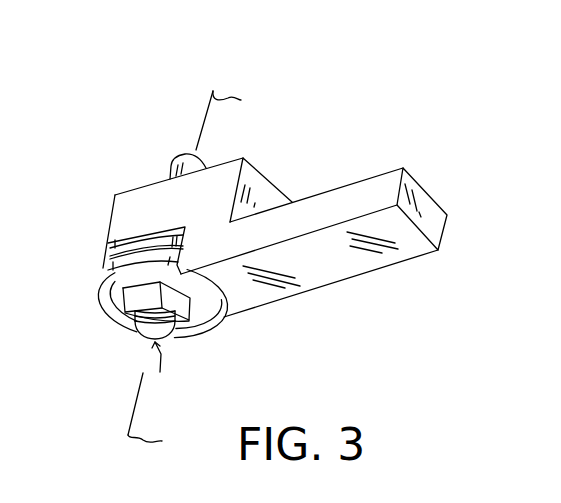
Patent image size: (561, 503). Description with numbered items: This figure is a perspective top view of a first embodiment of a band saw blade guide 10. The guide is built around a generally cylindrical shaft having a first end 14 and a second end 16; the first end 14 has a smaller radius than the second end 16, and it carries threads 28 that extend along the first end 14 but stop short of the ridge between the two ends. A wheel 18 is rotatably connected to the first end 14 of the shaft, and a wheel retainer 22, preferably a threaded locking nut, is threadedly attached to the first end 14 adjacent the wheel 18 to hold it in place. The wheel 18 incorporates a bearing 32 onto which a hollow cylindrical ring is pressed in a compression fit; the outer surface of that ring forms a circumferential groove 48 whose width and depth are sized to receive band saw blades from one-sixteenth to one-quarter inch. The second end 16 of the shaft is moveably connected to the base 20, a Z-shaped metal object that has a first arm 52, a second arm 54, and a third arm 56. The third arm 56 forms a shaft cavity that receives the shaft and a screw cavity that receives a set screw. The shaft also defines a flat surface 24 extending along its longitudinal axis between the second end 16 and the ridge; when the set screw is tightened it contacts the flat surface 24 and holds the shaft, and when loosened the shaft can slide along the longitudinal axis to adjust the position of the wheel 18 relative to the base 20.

The band saw blade guide 10 is at (348, 87).
The first end 14 is at (162, 338).
The second end 16 is at (228, 160).
The wheel 18 is at (128, 237).
The base 20 is at (343, 281).
The wheel retainer 22 is at (128, 312).
The flat surface 24 is at (170, 165).
The threads 28 is at (133, 320).
The bearing 32 is at (126, 312).
The groove 48 is at (107, 259).
The first arm 52 is at (378, 178).
The second arm 54 is at (258, 190).
The third arm 56 is at (128, 201).